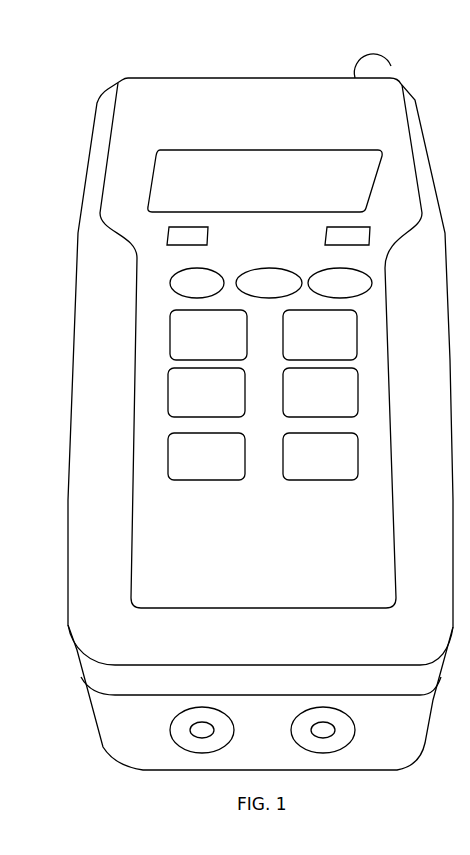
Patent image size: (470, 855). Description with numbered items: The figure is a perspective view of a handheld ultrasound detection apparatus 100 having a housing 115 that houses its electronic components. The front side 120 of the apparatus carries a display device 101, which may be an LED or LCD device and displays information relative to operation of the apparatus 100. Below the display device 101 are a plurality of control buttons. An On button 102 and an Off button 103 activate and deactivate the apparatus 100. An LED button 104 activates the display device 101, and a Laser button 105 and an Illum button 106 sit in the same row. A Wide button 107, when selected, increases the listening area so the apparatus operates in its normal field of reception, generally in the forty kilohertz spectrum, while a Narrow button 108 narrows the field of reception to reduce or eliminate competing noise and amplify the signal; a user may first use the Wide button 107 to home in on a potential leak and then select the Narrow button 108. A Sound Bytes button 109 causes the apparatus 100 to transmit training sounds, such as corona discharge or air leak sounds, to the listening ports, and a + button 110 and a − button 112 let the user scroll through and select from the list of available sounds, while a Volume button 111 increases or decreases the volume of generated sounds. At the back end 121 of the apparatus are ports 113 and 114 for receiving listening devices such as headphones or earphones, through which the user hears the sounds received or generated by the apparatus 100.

The handheld ultrasound detection apparatus 100 is at (113, 54).
The display device 101 is at (286, 193).
The On button 102 is at (167, 241).
The Off button 103 is at (325, 241).
The LED button 104 is at (170, 284).
The Laser button 105 is at (242, 272).
The Illum button 106 is at (310, 278).
The Wide button 107 is at (171, 343).
The Narrow button 108 is at (368, 343).
The Sound Bytes button 109 is at (168, 401).
The + button 110 is at (370, 403).
The Volume button 111 is at (168, 471).
The − button 112 is at (370, 463).
The port 113 is at (170, 740).
The port 114 is at (355, 735).
The housing 115 is at (392, 65).
The front side 120 is at (269, 136).
The back end 121 is at (271, 763).